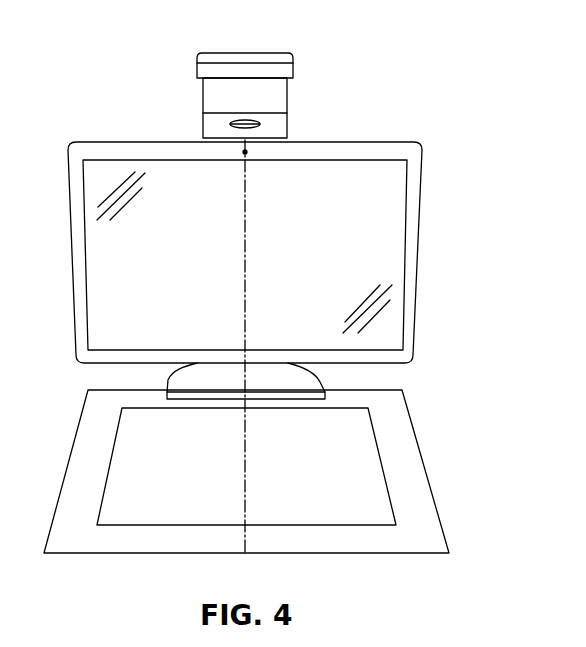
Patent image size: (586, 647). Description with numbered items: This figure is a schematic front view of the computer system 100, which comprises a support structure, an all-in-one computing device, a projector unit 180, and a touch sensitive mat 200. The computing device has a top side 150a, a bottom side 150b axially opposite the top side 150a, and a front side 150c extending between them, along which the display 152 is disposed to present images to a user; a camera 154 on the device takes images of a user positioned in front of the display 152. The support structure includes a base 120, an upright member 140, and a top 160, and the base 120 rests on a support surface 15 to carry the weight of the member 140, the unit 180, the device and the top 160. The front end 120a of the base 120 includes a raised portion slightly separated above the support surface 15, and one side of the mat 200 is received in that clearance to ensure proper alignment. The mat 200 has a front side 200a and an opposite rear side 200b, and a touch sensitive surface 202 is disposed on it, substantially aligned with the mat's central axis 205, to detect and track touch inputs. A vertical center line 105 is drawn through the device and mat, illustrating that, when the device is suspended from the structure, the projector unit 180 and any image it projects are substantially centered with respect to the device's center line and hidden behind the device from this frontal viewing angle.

The computer system 100 is at (478, 212).
The central axis 105 is at (245, 188).
The base 120 is at (156, 389).
The front end 120a is at (193, 412).
The upright member 140 is at (195, 94).
The top side 150a is at (340, 142).
The bottom side 150b is at (362, 363).
The front side 150c is at (82, 259).
The display 152 is at (320, 218).
The camera 154 is at (247, 151).
The top 160 is at (300, 46).
The projector unit 180 is at (194, 128).
The touch sensitive mat 200 is at (405, 503).
The front side 200a is at (357, 553).
The rear side 200b is at (143, 389).
The touch sensitive surface 202 is at (389, 451).
The central axis 205 is at (247, 425).
The support surface 15 is at (578, 481).